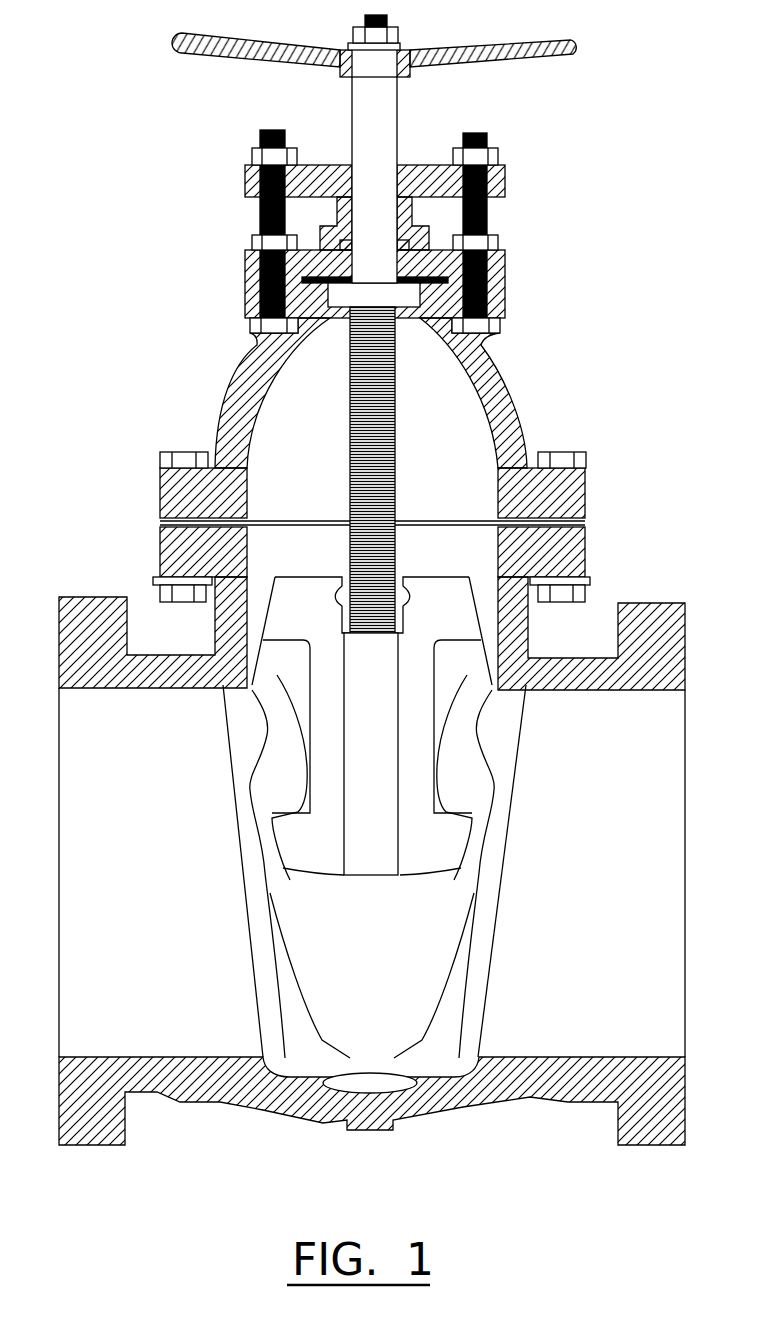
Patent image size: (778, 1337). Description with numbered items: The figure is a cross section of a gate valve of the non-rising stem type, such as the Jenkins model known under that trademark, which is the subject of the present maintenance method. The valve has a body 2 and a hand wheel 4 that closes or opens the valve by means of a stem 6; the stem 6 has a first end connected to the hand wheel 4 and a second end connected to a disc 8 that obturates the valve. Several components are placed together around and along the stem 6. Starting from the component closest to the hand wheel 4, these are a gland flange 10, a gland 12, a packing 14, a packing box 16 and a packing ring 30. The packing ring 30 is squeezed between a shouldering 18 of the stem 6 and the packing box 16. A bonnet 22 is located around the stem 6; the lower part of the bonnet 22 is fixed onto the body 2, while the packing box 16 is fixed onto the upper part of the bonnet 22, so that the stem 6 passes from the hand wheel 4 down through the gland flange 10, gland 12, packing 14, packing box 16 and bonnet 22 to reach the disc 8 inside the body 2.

The body 2 is at (586, 546).
The hand wheel 4 is at (563, 40).
The stem 6 is at (363, 110).
The disc 8 is at (368, 993).
The gland flange 10 is at (413, 182).
The gland 12 is at (340, 211).
The packing 14 is at (428, 235).
The packing box 16 is at (253, 260).
The shouldering 18 is at (484, 340).
The bonnet 22 is at (238, 428).
The packing ring 30 is at (470, 252).